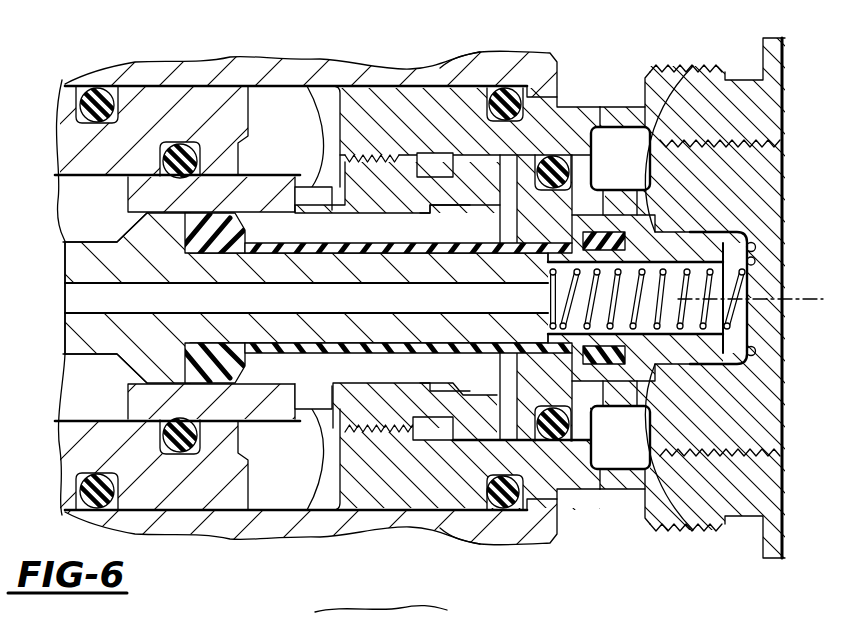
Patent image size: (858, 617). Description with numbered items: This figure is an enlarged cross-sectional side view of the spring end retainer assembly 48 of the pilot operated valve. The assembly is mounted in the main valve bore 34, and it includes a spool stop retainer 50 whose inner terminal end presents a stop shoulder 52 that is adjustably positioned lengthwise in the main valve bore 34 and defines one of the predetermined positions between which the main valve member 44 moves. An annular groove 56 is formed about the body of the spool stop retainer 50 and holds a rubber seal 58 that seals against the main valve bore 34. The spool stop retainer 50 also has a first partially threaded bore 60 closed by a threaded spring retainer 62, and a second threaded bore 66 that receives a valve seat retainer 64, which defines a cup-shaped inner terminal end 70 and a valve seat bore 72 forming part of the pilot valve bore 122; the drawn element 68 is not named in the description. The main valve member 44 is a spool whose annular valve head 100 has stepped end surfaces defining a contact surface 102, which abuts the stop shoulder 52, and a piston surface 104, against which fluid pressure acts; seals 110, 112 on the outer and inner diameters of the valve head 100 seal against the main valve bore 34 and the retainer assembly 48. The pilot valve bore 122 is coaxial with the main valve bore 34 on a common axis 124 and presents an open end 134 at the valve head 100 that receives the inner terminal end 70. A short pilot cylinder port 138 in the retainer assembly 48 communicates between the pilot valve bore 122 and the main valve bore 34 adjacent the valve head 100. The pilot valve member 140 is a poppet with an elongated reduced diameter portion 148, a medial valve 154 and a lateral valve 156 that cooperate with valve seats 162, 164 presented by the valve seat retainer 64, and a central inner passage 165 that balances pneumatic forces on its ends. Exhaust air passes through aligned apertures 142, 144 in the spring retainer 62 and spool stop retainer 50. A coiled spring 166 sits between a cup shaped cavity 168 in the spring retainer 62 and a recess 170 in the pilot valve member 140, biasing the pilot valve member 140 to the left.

The main valve bore 34 is at (263, 86).
The main valve member 44 is at (56, 135).
The spring end retainer assembly 48 is at (400, 80).
The spool stop retainer 50 is at (462, 62).
The stop shoulder 52 is at (332, 100).
The annular groove 56 is at (562, 100).
The rubber seal 58 is at (525, 65).
The first partially threaded bore 60 is at (780, 152).
The spring retainer 62 is at (780, 190).
The valve seat retainer 64 is at (376, 388).
The second threaded bore 66 is at (396, 432).
The seal carrier 68 is at (560, 488).
The cup-shaped inner terminal end 70 is at (278, 180).
The valve seat bore 72 is at (432, 213).
The annular valve head 100 is at (147, 90).
The contact surface 102 is at (262, 540).
The piston surface 104 is at (274, 441).
The seal 110 is at (90, 88).
The seal 112 is at (197, 145).
The pilot valve bore 122 is at (75, 194).
The axis 124 is at (808, 288).
The open end 134 is at (248, 178).
The short pilot cylinder port 138 is at (306, 86).
The pilot valve member 140 is at (62, 268).
The aperture 142 is at (615, 185).
The aperture 144 is at (620, 108).
The elongated reduced diameter portion 148 is at (95, 355).
The medial valve 154 is at (270, 297).
The lateral valve 156 is at (545, 250).
The valve seat 162 is at (280, 222).
The valve seat 164 is at (685, 80).
The central inner passage 165 is at (160, 287).
The coiled spring 166 is at (756, 362).
The cup shaped cavity 168 is at (756, 244).
The recess 170 is at (690, 278).